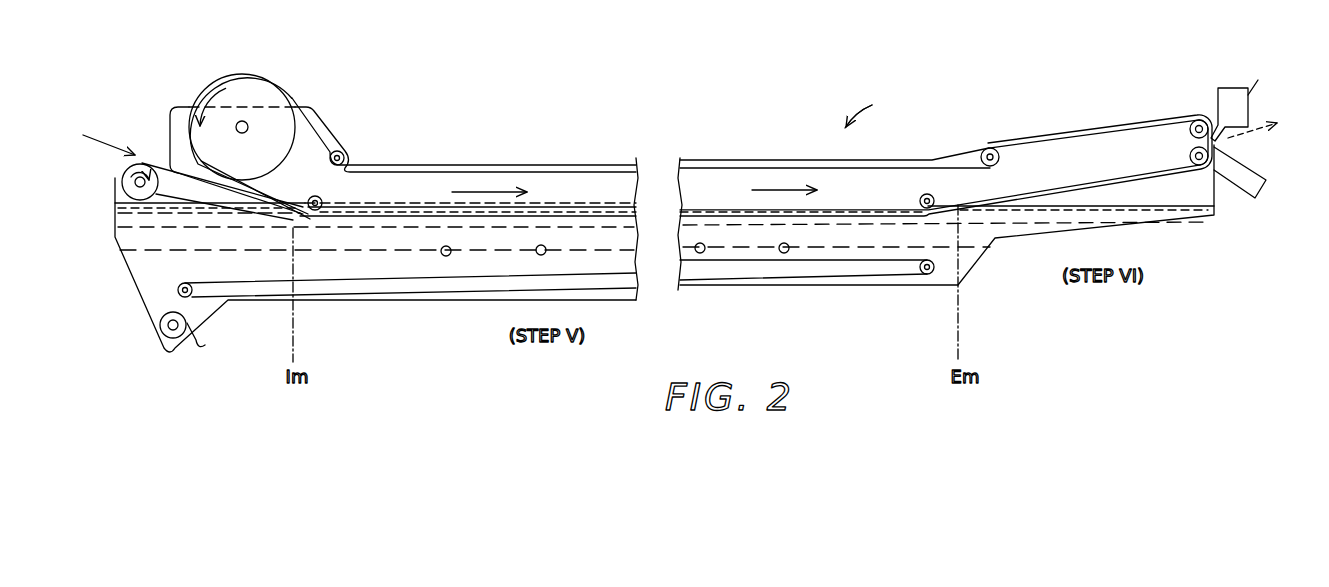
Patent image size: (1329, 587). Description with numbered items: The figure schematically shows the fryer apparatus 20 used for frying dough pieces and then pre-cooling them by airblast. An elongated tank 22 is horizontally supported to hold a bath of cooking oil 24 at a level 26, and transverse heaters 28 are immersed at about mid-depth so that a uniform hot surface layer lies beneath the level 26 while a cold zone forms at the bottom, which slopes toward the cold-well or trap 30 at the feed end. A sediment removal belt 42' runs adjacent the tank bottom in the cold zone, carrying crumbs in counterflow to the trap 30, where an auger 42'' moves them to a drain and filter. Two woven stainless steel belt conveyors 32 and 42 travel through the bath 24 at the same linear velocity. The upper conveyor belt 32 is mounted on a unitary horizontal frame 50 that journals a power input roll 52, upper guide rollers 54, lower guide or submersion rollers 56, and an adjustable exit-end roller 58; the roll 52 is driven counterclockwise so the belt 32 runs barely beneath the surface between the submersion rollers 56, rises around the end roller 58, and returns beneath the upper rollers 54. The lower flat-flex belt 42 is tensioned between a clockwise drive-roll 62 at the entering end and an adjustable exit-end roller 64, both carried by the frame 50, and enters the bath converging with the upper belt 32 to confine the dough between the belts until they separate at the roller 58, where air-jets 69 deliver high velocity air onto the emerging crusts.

The fryer apparatus 20 is at (873, 111).
The elongated tank 22 is at (137, 285).
The bath of cooking oil 24 is at (130, 240).
The level 26 is at (114, 203).
The transverse heaters 28 is at (536, 252).
The cold-well or trap 30 is at (160, 330).
The upper conveyor belt 32 is at (282, 200).
The lower flat-flex conveyor belt 42 is at (530, 205).
The sediment removal belt 42' is at (556, 287).
The auger 42'' is at (213, 334).
The unitary horizontal frame 50 is at (316, 110).
The power input roll 52 is at (250, 85).
The upper guide rollers 54 is at (345, 152).
The lower guide (submersion) rollers 56 is at (321, 200).
The exit-end roller 58 is at (1197, 119).
The horizontal drive-roll 62 is at (124, 172).
The exit-end roller 64 is at (1200, 166).
The air-jets 69 is at (1232, 92).